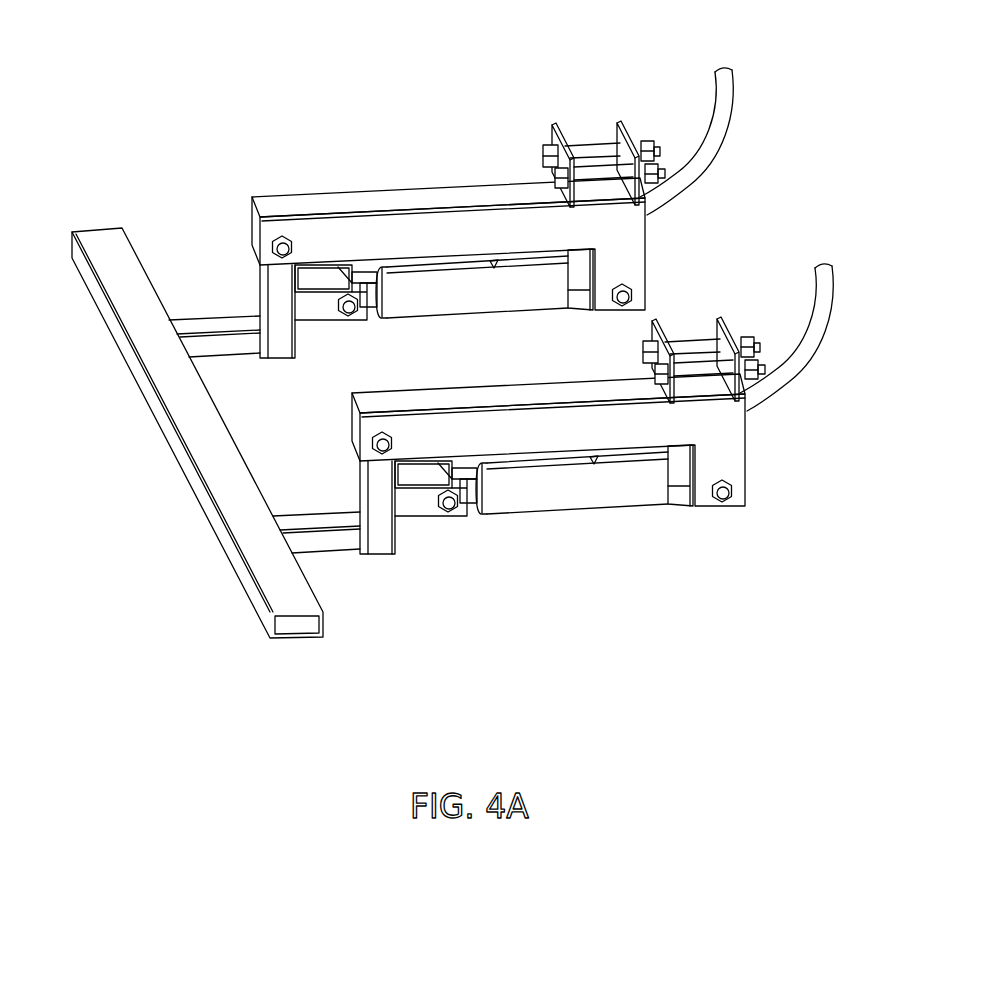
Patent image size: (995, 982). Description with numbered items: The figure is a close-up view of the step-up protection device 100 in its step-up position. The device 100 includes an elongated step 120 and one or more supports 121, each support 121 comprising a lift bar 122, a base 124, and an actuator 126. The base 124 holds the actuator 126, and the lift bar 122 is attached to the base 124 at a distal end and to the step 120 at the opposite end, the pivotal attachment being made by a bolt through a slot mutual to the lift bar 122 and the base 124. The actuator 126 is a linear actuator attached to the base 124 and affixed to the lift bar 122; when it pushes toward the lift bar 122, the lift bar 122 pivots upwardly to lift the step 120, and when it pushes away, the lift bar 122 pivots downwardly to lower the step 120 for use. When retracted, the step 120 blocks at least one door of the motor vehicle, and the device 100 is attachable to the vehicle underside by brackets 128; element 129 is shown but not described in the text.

The step-up protection device 100 is at (197, 70).
The elongated step 120 is at (183, 410).
The support 121 is at (317, 173).
The lift bar 122 is at (285, 342).
The base 124 is at (413, 232).
The actuator 126 is at (421, 305).
The bracket 128 is at (628, 123).
The hook 129 is at (695, 175).